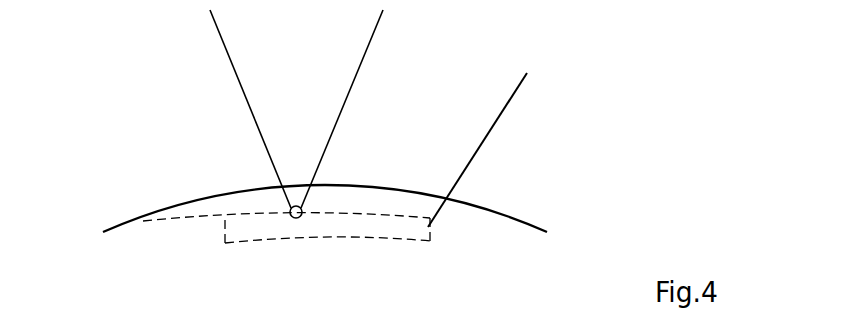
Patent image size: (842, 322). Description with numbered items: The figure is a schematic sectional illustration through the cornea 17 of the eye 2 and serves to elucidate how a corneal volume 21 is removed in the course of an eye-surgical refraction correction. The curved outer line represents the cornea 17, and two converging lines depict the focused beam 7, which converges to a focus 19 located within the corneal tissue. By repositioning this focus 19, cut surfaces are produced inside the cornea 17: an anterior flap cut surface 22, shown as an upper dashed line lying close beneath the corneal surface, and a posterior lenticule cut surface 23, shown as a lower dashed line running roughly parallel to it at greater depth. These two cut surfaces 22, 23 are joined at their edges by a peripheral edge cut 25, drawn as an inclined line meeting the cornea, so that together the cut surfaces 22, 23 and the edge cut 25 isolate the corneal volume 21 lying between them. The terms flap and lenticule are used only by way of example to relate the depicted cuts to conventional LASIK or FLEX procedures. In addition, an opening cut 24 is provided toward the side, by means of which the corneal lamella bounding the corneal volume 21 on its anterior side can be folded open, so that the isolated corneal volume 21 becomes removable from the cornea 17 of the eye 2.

The eye 2 is at (165, 135).
The focused beam 7 is at (360, 65).
The peripheral edge cut 25 is at (505, 144).
The cornea 17 is at (483, 203).
The anterior flap cut surface 22 is at (372, 213).
The focus 19 is at (293, 223).
The posterior lenticule cut surface 23 is at (343, 238).
The opening cut 24 is at (185, 227).
The corneal volume 21 is at (417, 235).